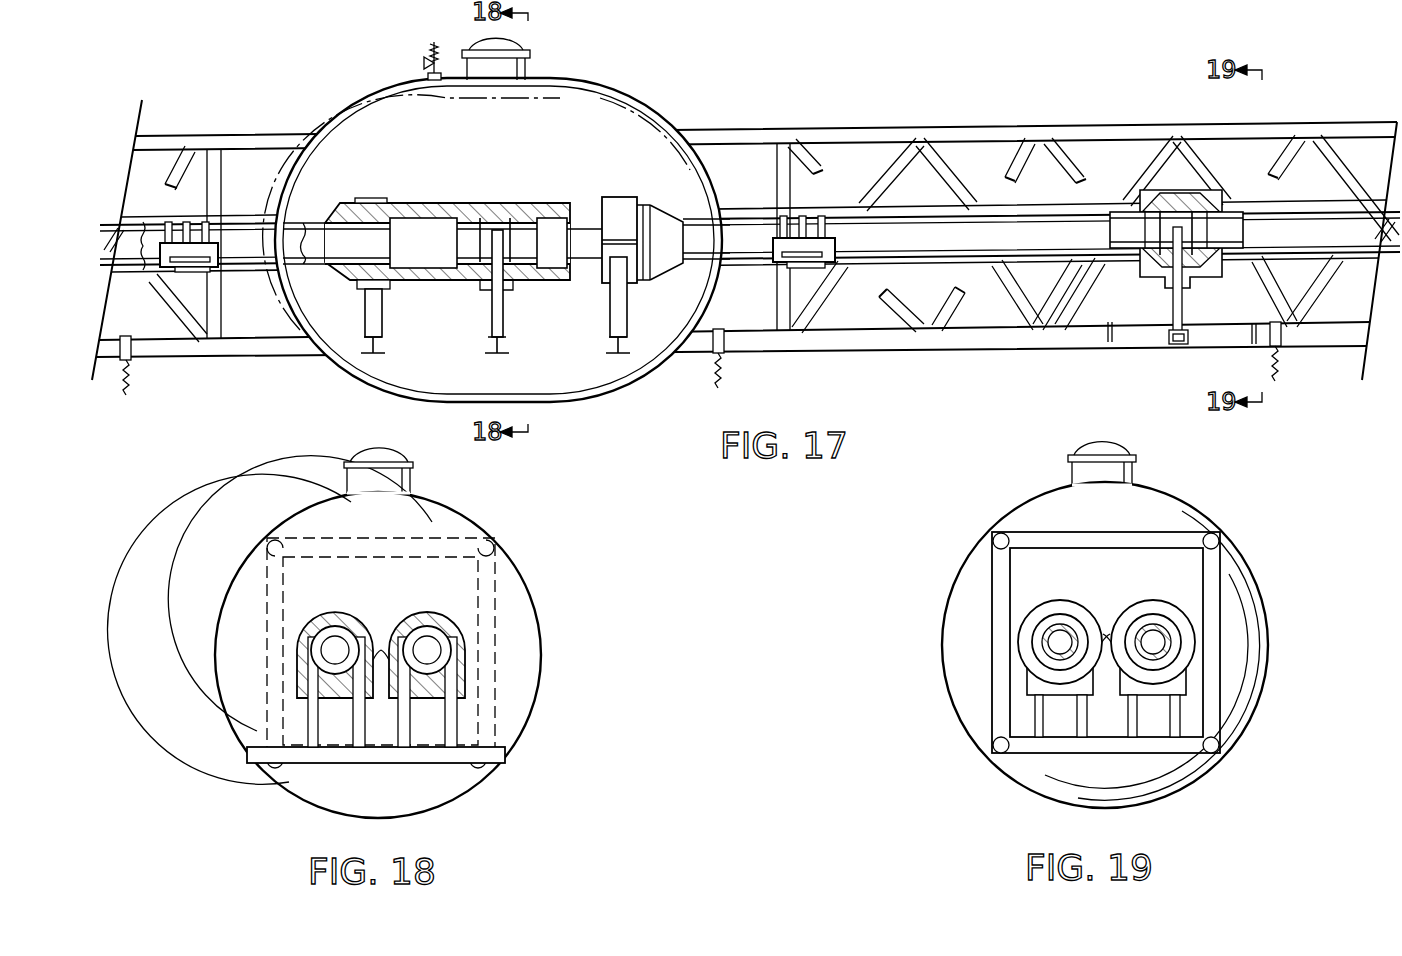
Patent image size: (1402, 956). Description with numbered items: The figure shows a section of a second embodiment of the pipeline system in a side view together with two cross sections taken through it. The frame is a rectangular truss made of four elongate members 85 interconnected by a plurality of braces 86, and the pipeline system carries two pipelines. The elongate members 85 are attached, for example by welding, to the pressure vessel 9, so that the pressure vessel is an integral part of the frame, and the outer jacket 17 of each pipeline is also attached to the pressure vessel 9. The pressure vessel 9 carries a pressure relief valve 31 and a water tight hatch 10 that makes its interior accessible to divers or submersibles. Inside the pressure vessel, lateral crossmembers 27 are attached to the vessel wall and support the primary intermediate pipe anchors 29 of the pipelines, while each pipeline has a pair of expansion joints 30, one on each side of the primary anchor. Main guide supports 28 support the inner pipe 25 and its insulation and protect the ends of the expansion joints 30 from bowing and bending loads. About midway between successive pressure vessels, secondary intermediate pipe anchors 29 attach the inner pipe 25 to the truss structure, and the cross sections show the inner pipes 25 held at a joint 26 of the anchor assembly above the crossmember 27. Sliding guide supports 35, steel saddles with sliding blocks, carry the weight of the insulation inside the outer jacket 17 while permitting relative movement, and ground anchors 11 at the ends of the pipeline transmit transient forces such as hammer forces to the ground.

In FIG. 18, the pressure vessel 9 is at (520, 562).
In FIG. 19, the pressure vessel 9 is at (1240, 565).
In FIG. 17, the water tight hatch 10 is at (523, 47).
In FIG. 18, the water tight hatch 10 is at (363, 446).
In FIG. 19, the water tight hatch 10 is at (1094, 445).
In FIG. 17, the ground anchor 11 is at (136, 385).
In FIG. 17, the outer jacket 17 is at (747, 210).
In FIG. 18, the outer jacket 17 is at (381, 650).
In FIG. 19, the outer jacket 17 is at (1065, 620).
In FIG. 17, the inner pipe 25 is at (1236, 211).
In FIG. 18, the inner pipe 25 is at (330, 632).
In FIG. 19, the inner pipe 25 is at (1042, 632).
In FIG. 18, the clamp joint 26 is at (409, 616).
In FIG. 19, the clamp joint 26 is at (1125, 616).
In FIG. 18, the lateral crossmember 27 is at (342, 763).
In FIG. 17, the main guide support 28 is at (372, 198).
In FIG. 18, the intermediate pipe anchor 29 is at (306, 716).
In FIG. 19, the intermediate pipe anchor 29 is at (1032, 712).
In FIG. 17, the expansion joint 30 is at (434, 218).
In FIG. 17, the pressure relief valve 31 is at (427, 62).
In FIG. 17, the sliding guide support 35 is at (218, 250).
In FIG. 17, the elongate member 85 is at (978, 348).
In FIG. 18, the elongate member 85 is at (381, 653).
In FIG. 19, the elongate member 85 is at (994, 535).
In FIG. 17, the brace 86 is at (889, 174).
In FIG. 19, the brace 86 is at (1090, 538).